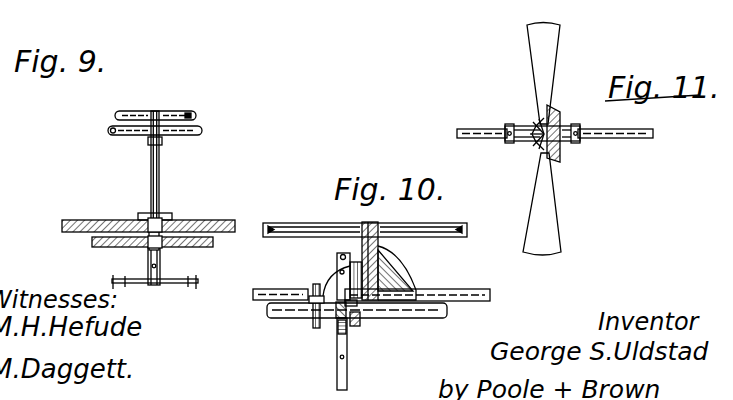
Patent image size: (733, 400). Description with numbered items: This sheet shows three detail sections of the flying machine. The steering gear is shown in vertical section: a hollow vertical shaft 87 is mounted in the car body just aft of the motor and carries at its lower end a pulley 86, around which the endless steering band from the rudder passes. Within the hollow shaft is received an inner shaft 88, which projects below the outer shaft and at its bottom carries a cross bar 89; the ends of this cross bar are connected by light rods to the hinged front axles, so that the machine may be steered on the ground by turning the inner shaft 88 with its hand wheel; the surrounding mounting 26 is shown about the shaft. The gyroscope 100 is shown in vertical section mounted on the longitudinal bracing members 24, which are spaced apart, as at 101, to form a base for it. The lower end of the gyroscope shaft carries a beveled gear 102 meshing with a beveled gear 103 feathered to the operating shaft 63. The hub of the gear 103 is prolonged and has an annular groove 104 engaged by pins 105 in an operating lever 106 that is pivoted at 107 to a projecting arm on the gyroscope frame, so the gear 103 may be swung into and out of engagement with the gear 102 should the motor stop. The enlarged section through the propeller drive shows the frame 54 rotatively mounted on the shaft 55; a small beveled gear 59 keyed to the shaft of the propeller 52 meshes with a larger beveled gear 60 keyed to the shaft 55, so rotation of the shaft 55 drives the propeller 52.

In FIG. 9, the plate 26 is at (84, 212).
In FIG. 9, the pulley 86 is at (213, 246).
In FIG. 9, the vertical shaft 87 is at (159, 188).
In FIG. 9, the inner shaft 88 is at (152, 157).
In FIG. 9, the cross bar 89 is at (156, 284).
In FIG. 10, the gyroscope 100 is at (290, 223).
In FIG. 10, the spacing of brace bars 101 is at (431, 290).
In FIG. 10, the beveled gear 102 is at (388, 290).
In FIG. 10, the beveled gear 103 is at (356, 326).
In FIG. 10, the annular groove 104 is at (350, 326).
In FIG. 10, the pins 105 is at (338, 332).
In FIG. 10, the operating lever 106 is at (337, 373).
In FIG. 10, the pivot 107 is at (340, 257).
In FIG. 10, the longitudinal bracing members 24 is at (486, 296).
In FIG. 10, the shaft 63 is at (272, 316).
In FIG. 11, the propeller 52 is at (557, 58).
In FIG. 11, the frame 54 is at (522, 127).
In FIG. 11, the shaft 55 is at (653, 136).
In FIG. 11, the beveled gear 59 is at (538, 147).
In FIG. 11, the beveled gear 60 is at (560, 122).